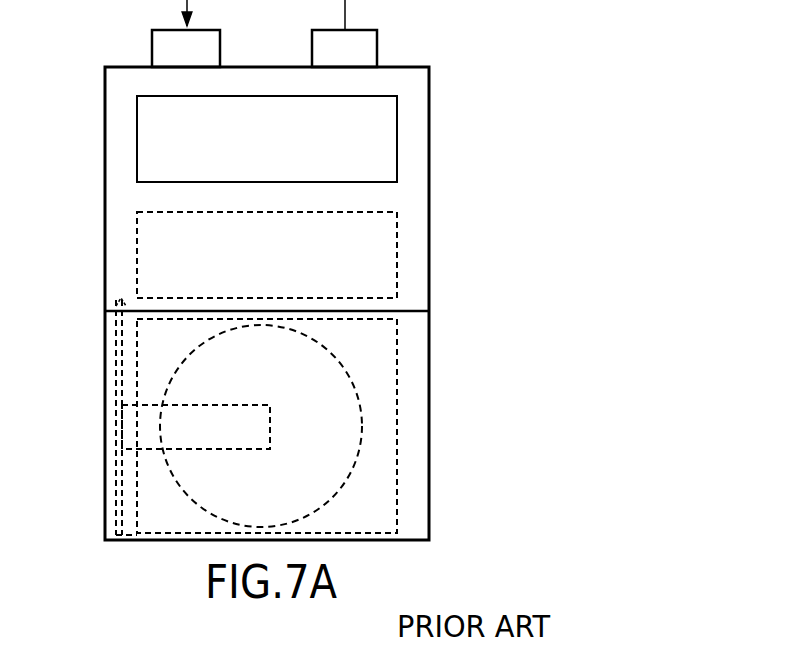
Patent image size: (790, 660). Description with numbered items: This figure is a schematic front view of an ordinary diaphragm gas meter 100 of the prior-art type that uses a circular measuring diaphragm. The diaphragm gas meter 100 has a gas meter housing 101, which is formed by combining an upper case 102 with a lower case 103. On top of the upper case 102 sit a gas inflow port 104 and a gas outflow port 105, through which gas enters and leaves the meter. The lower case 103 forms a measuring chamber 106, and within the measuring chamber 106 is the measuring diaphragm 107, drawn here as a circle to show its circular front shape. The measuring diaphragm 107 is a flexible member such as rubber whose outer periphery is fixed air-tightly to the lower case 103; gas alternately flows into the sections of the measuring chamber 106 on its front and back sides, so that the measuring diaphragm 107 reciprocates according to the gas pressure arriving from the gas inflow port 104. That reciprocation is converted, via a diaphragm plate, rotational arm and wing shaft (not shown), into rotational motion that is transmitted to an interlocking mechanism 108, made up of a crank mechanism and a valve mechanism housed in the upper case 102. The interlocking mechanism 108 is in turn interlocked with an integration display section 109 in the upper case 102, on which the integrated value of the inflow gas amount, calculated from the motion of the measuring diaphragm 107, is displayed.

The diaphragm gas meter 100 is at (259, 303).
The gas meter housing 101 is at (105, 280).
The upper case 102 is at (429, 184).
The lower case 103 is at (429, 452).
The gas inflow port 104 is at (220, 44).
The gas outflow port 105 is at (377, 44).
The measuring chamber 106 is at (412, 370).
The measuring diaphragm 107 is at (348, 412).
The interlocking mechanism 108 is at (397, 285).
The integration display section 109 is at (397, 139).